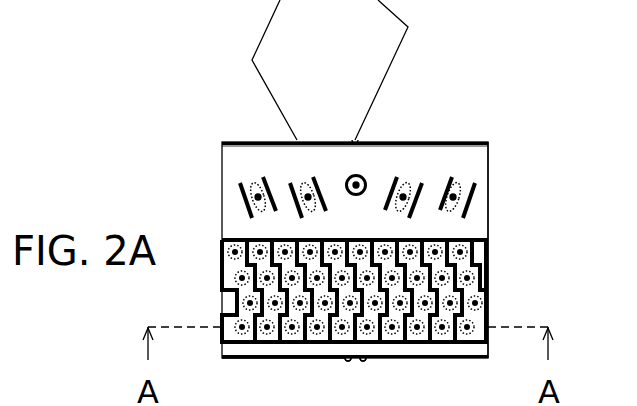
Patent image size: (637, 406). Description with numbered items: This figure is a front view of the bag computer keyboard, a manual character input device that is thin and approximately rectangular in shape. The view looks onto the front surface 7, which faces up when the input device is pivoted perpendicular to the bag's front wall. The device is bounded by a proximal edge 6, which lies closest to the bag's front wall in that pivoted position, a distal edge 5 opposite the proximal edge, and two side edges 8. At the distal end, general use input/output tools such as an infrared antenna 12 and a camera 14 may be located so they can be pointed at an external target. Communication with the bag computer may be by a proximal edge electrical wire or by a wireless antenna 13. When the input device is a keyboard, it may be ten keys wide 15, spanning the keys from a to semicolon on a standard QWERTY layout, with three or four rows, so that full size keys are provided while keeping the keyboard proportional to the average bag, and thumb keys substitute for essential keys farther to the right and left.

The distal edge 5 is at (263, 363).
The proximal edge 6 is at (262, 70).
The front surface 7 is at (245, 162).
The side edges 8 is at (495, 222).
The infrared antenna 12 is at (363, 364).
The wireless antenna 13 is at (408, 70).
The camera 14 is at (352, 364).
The ten keys wide 15 is at (397, 310).